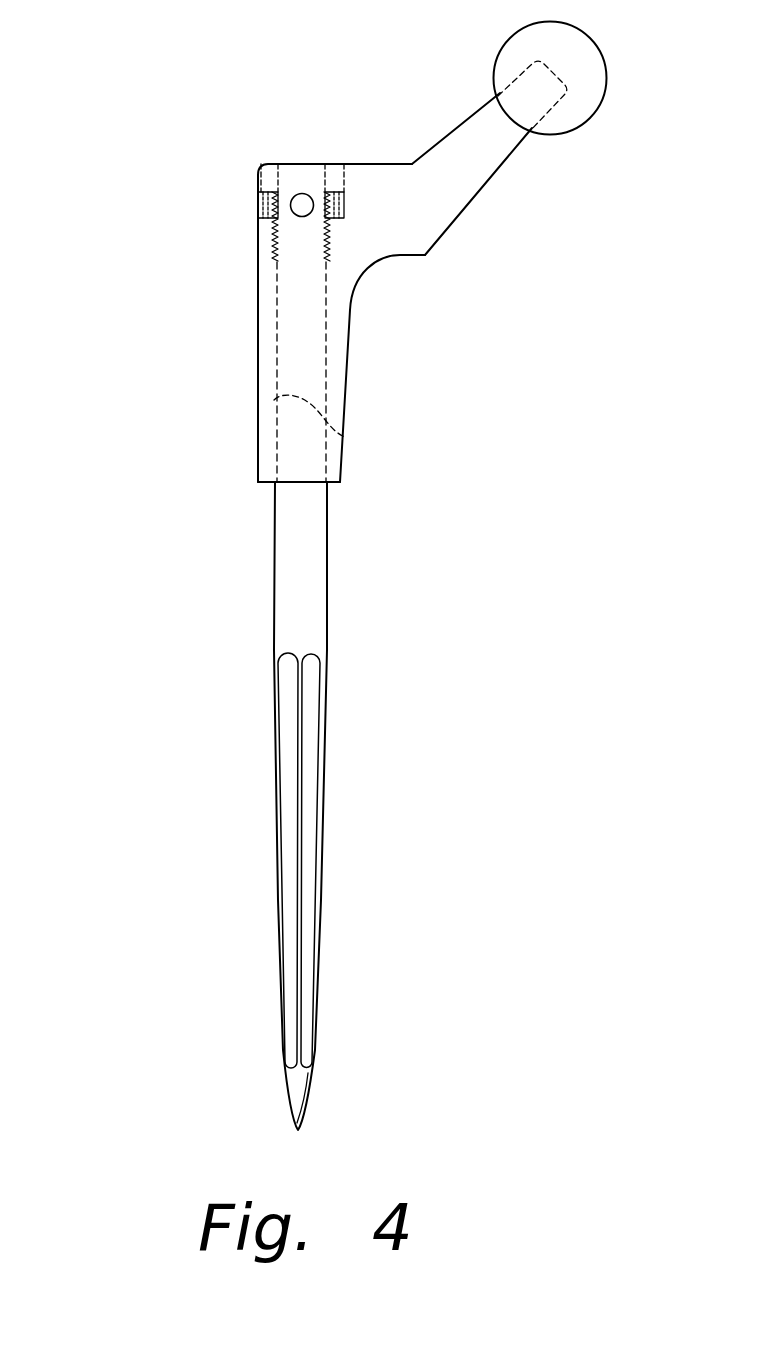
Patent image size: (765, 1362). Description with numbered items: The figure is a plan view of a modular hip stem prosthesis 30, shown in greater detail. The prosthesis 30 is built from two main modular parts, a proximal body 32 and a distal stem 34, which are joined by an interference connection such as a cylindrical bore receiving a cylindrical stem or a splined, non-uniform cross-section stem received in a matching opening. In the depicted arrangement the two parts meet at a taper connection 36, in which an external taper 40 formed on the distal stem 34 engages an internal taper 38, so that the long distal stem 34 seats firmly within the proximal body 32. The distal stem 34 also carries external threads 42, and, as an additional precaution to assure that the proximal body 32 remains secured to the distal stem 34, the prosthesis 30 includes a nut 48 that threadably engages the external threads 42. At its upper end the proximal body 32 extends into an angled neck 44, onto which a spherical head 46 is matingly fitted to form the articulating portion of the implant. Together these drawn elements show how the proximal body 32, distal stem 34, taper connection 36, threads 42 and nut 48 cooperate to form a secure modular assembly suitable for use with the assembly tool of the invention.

The prosthesis 30 is at (160, 112).
The proximal body 32 is at (385, 258).
The distal stem 34 is at (327, 612).
The taper connection 36 is at (208, 361).
The internal taper 38 is at (345, 437).
The external taper 40 is at (275, 502).
The external threads 42 is at (262, 236).
The neck 44 is at (490, 175).
The head 46 is at (607, 80).
The nut 48 is at (270, 187).